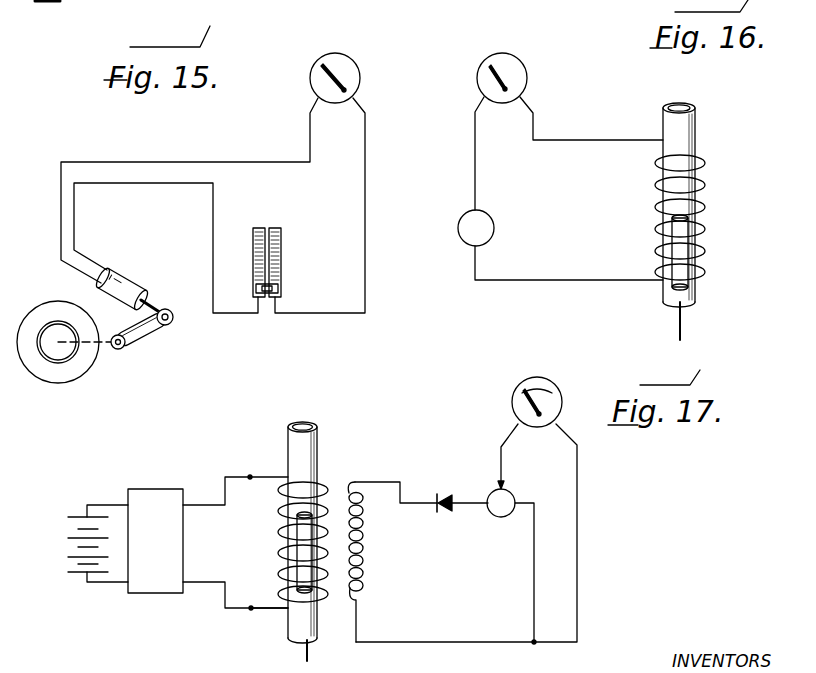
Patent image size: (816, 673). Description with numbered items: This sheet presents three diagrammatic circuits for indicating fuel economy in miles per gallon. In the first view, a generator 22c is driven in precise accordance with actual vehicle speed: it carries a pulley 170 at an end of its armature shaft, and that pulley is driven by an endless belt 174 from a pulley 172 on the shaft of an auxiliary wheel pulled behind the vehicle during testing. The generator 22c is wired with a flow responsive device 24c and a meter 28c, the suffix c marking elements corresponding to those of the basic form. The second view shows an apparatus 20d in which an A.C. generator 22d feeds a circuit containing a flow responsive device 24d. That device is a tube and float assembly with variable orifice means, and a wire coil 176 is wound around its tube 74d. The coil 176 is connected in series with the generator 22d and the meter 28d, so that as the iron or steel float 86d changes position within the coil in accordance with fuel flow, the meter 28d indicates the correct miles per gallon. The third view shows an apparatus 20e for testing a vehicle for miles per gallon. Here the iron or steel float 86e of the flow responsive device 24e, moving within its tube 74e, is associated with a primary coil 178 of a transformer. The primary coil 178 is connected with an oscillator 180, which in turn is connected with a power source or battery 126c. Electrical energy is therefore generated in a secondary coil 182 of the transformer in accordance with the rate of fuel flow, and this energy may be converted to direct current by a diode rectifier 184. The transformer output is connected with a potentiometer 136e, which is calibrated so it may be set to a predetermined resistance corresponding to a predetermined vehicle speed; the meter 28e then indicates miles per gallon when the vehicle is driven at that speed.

In FIG. 15, the meter 28c is at (338, 57).
In FIG. 15, the generator 22c is at (128, 283).
In FIG. 15, the flow responsive device 24c is at (291, 268).
In FIG. 15, the pulley 170 is at (174, 321).
In FIG. 15, the pulley 172 is at (117, 350).
In FIG. 15, the endless belt 174 is at (148, 341).
In FIG. 16, the meter 28d is at (512, 72).
In FIG. 16, the apparatus 20d is at (563, 130).
In FIG. 16, the A.C. generator 22d is at (485, 228).
In FIG. 16, the tube 74d is at (690, 122).
In FIG. 16, the flow responsive device 24d is at (706, 178).
In FIG. 16, the float 86d is at (690, 228).
In FIG. 16, the wire coil 176 is at (700, 248).
In FIG. 17, the battery 126c is at (72, 520).
In FIG. 17, the oscillator 180 is at (152, 582).
In FIG. 17, the primary coil 178 is at (268, 610).
In FIG. 17, the tube 74e is at (305, 448).
In FIG. 17, the flow responsive device 24e is at (335, 478).
In FIG. 17, the float 86e is at (292, 575).
In FIG. 17, the secondary coil 182 is at (362, 563).
In FIG. 17, the apparatus 20e is at (452, 452).
In FIG. 17, the diode rectifier 184 is at (446, 497).
In FIG. 17, the potentiometer 136e is at (504, 518).
In FIG. 17, the meter 28e is at (553, 386).